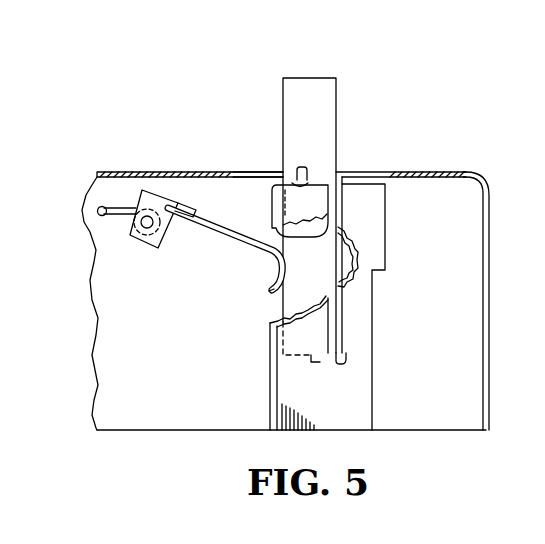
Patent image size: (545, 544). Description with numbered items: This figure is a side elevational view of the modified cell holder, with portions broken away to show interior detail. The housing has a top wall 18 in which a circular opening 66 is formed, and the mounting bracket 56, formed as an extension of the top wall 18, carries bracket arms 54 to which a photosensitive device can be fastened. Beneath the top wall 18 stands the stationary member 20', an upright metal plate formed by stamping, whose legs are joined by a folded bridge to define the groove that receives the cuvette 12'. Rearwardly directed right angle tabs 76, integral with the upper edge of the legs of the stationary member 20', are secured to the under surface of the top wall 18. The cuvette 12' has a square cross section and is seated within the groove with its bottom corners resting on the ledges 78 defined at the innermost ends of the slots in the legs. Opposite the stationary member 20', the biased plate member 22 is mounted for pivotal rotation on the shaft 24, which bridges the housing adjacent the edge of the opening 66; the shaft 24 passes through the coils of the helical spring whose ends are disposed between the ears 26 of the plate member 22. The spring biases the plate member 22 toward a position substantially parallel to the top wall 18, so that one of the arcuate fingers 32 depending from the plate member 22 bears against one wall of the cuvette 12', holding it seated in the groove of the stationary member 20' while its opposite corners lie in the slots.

The cuvette 12' is at (334, 217).
The top wall 18 is at (137, 172).
The circular opening 66 is at (233, 176).
The right angle tabs 76 is at (292, 177).
The mounting bracket 56 is at (423, 172).
The bracket arms 54 is at (489, 330).
The ears 26 is at (130, 232).
The shaft 24 is at (144, 236).
The plate member 22 is at (233, 235).
The fingers 32 is at (268, 290).
The ledges 78 is at (320, 363).
The stationary member 20' is at (284, 303).